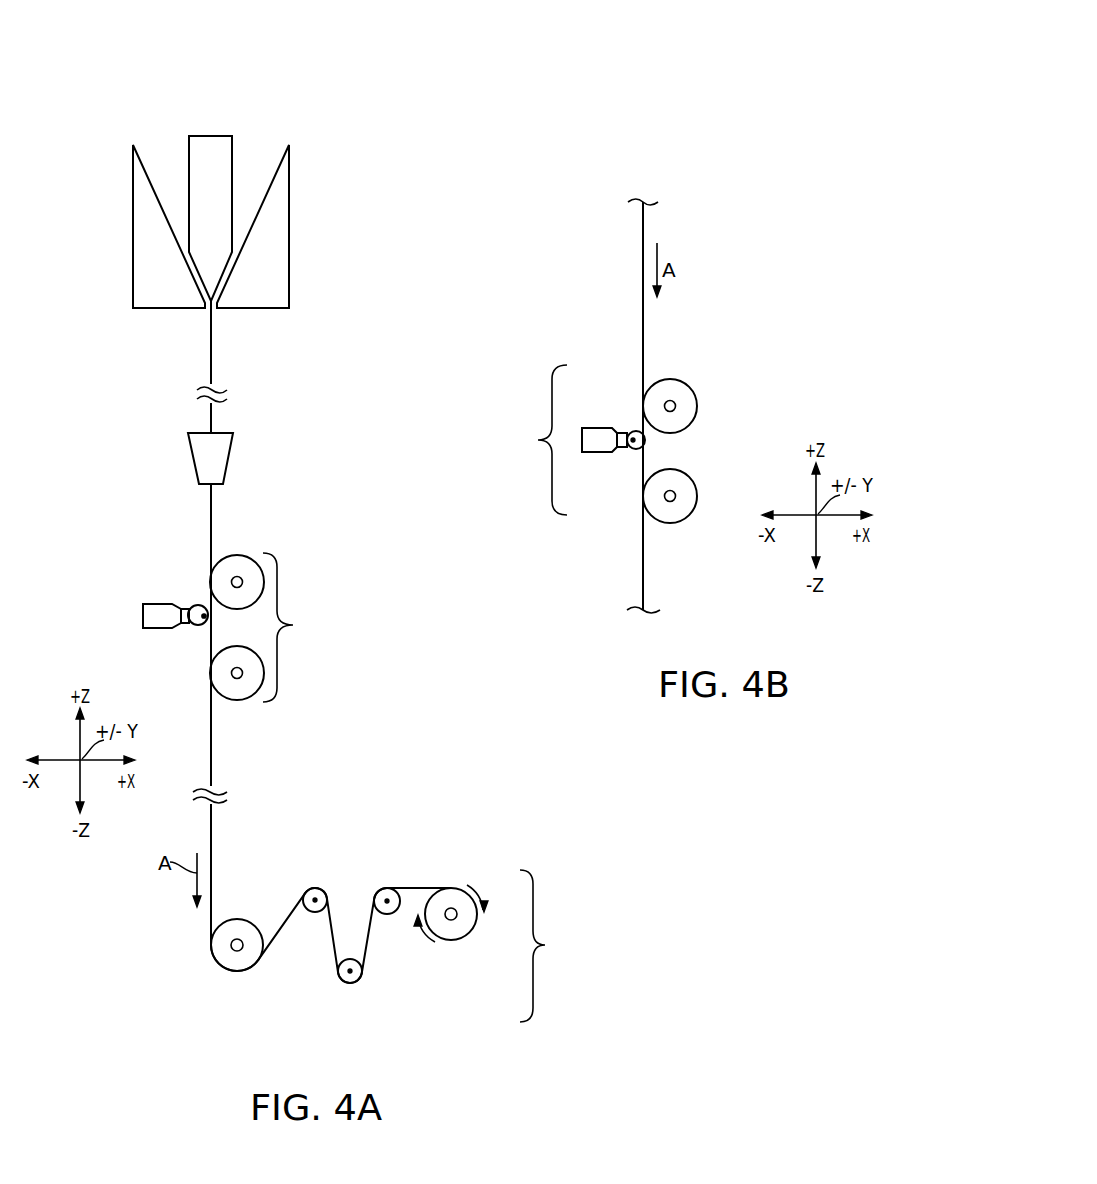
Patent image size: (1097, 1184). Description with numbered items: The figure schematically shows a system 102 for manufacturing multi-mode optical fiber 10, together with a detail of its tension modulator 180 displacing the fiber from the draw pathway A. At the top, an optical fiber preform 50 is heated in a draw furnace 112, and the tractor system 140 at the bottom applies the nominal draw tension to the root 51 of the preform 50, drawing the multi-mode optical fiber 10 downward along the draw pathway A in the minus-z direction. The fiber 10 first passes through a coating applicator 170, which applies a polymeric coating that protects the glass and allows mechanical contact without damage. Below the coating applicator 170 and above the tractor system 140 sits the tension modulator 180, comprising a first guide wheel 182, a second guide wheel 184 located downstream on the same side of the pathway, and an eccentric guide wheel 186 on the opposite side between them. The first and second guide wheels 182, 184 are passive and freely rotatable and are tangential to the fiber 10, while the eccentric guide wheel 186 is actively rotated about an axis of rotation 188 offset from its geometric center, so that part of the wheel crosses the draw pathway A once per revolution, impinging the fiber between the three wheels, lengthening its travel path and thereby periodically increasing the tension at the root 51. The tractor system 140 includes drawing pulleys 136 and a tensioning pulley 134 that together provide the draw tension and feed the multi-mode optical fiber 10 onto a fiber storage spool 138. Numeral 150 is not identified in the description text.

In FIG. 4A, the system for manufacturing multi-mode optical fiber 102 is at (112, 88).
In FIG. 4A, the optical fiber preform 50 is at (232, 130).
In FIG. 4A, the draw furnace 112 is at (298, 190).
In FIG. 4A, the root 51 is at (222, 318).
In FIG. 4A, the multi-mode optical fiber 10 is at (198, 364).
In FIG. 4A, the coating applicator 170 is at (245, 452).
In FIG. 4A, the tension modulator 180 is at (300, 627).
In FIG. 4B, the tension modulator 180 is at (529, 440).
In FIG. 4A, the first guide wheel 182 is at (242, 558).
In FIG. 4B, the first guide wheel 182 is at (675, 383).
In FIG. 4A, the second guide wheel 184 is at (242, 696).
In FIG. 4B, the second guide wheel 184 is at (673, 523).
In FIG. 4A, the eccentric guide wheel 186 is at (200, 606).
In FIG. 4B, the eccentric guide wheel 186 is at (637, 429).
In FIG. 4A, the axis of rotation 188 is at (204, 619).
In FIG. 4B, the axis of rotation 188 is at (632, 447).
In FIG. 4A, the tensioning pulleys 134 is at (232, 971).
In FIG. 4A, the drawing pulleys 136 is at (311, 912).
In FIG. 4A, the fiber storage spool 138 is at (462, 938).
In FIG. 4A, the tractor system 140 is at (556, 946).
In FIG. 4B, the fiber 150 is at (634, 275).